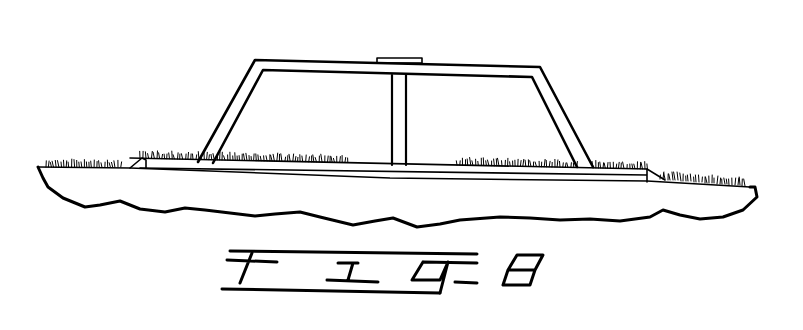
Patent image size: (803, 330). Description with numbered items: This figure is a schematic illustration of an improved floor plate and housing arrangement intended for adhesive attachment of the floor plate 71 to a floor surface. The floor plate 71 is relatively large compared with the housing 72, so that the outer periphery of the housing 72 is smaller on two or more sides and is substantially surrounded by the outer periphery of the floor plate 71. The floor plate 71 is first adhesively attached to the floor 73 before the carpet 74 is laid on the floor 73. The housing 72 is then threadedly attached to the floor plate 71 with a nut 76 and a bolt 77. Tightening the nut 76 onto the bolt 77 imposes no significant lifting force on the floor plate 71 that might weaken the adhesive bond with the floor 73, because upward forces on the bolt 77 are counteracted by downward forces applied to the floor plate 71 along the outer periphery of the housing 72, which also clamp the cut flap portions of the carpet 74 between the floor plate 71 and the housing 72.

The floor plate 71 is at (437, 167).
The housing 72 is at (452, 65).
The floor 73 is at (137, 168).
The carpet 74 is at (623, 165).
The nut 76 is at (380, 57).
The bolt 77 is at (397, 117).